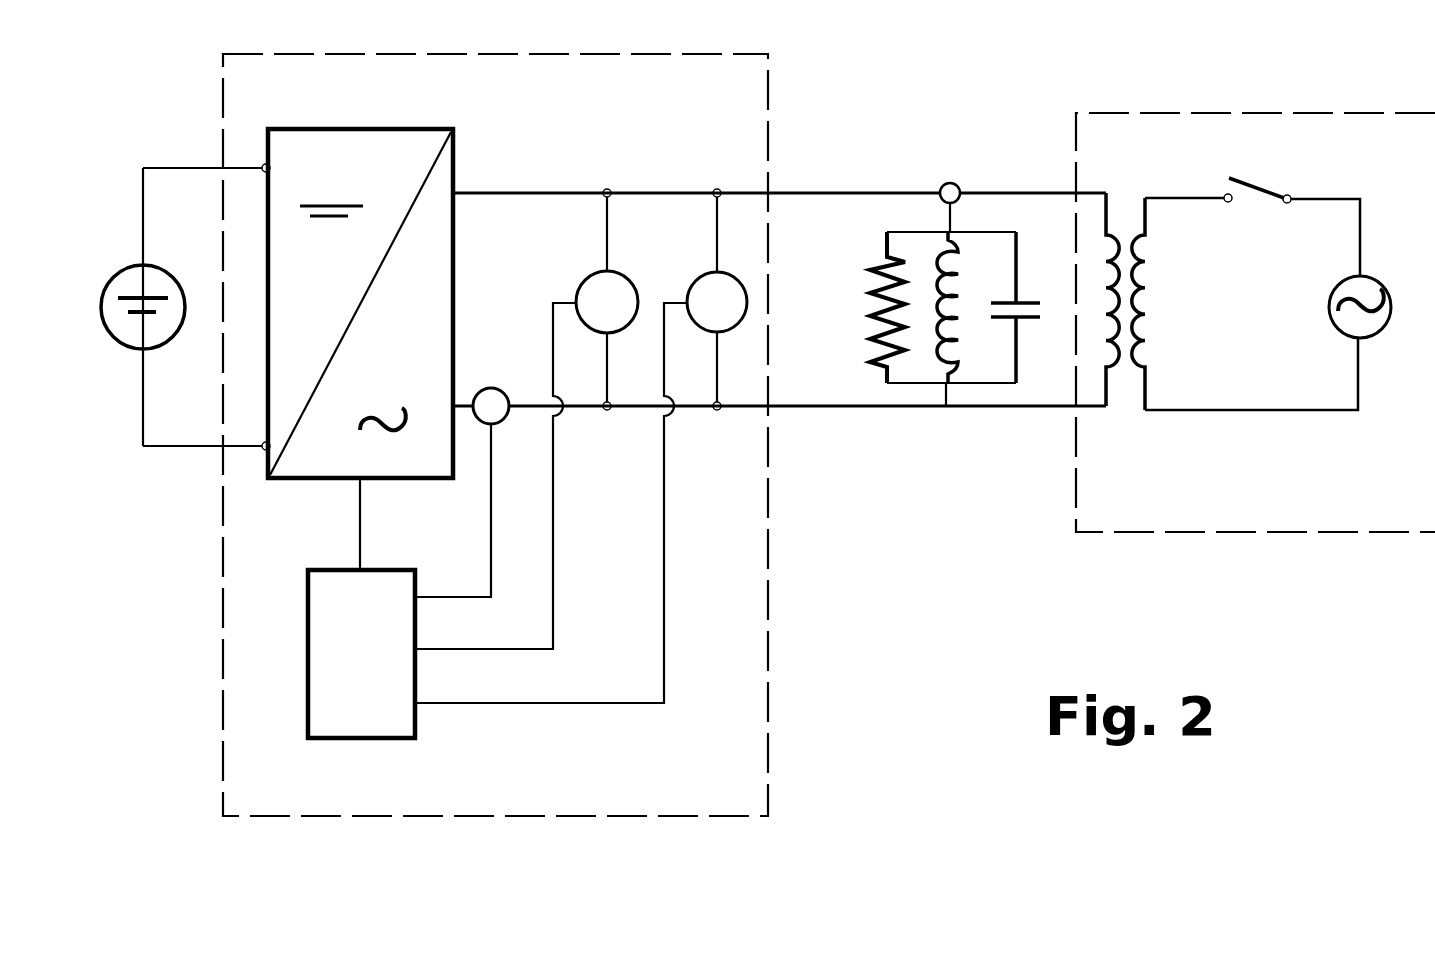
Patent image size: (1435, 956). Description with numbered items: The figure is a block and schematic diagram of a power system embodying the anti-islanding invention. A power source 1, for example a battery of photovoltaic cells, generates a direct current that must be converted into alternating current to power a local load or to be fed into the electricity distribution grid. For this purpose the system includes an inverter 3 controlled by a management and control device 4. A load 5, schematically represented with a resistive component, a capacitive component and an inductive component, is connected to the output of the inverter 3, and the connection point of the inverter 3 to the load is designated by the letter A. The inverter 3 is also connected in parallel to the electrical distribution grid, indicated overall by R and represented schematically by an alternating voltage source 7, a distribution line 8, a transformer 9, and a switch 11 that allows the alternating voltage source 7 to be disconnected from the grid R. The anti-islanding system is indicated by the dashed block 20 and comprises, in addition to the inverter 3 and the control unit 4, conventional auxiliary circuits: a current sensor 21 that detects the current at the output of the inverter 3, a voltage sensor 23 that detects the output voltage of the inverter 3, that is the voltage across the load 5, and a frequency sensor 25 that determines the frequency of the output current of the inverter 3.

The power source 1 is at (126, 349).
The inverter 3 is at (432, 185).
The management and control device 4 is at (332, 662).
The load 5 is at (858, 316).
The alternating voltage source 7 is at (1330, 326).
The distribution line 8 is at (1272, 412).
The transformer 9 is at (1131, 395).
The switch 11 is at (1264, 196).
The anti-islanding system block 20 is at (778, 716).
The current sensor 21 is at (491, 388).
The voltage sensor 23 is at (590, 275).
The frequency sensor 25 is at (716, 275).
The connection point A is at (958, 184).
The electrical distribution grid R is at (1264, 546).